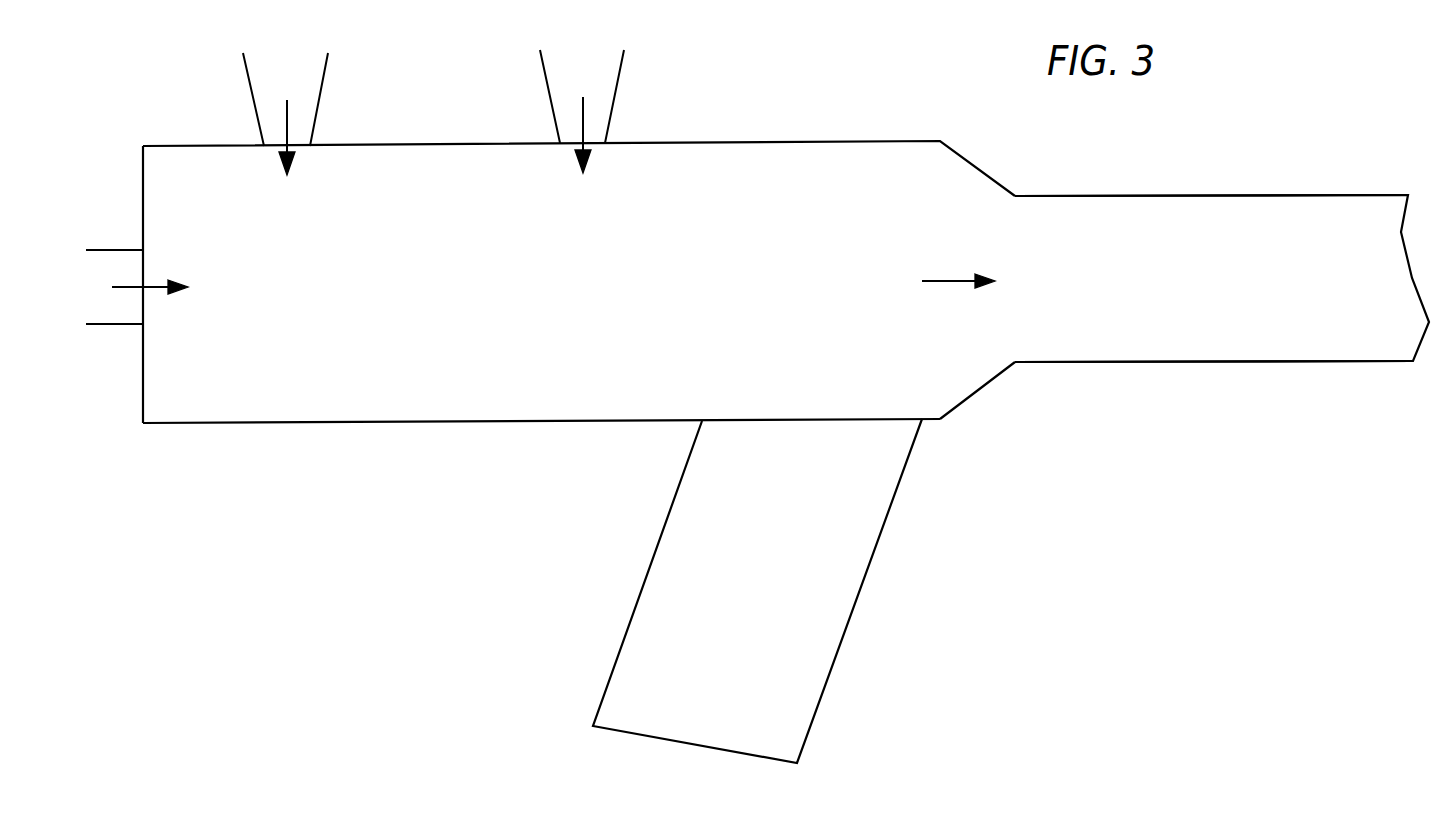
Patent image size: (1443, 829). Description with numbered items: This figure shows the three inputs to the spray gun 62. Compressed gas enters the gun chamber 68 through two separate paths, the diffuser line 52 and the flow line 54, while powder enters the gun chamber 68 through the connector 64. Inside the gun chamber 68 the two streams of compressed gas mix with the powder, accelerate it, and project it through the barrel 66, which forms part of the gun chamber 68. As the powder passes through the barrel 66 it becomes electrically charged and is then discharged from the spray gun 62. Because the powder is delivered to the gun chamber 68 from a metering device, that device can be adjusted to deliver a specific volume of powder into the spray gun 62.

The diffuser line 52 is at (547, 82).
The flow line 54 is at (132, 324).
The spray gun 62 is at (549, 421).
The connector 64 is at (247, 80).
The barrel 66 is at (1328, 195).
The gun chamber 68 is at (321, 400).